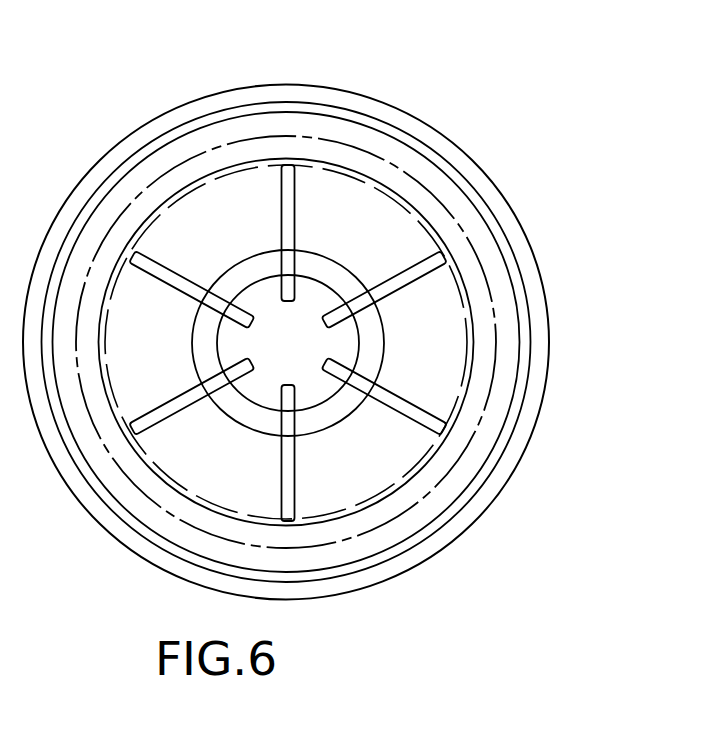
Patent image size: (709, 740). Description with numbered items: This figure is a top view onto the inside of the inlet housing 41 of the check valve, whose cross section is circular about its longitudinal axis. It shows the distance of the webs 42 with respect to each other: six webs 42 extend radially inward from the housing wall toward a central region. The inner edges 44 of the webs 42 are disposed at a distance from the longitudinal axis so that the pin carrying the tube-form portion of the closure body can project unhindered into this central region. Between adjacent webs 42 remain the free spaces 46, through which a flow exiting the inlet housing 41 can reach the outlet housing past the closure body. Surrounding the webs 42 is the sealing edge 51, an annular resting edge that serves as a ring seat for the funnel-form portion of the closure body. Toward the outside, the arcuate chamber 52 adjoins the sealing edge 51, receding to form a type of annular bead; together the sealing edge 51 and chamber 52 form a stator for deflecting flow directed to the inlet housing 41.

The inlet housing 41 is at (412, 101).
The webs 42 is at (289, 219).
The inner edges 44 is at (288, 343).
The spaces 46 is at (375, 248).
The sealing edge 51 is at (202, 178).
The chamber 52 is at (255, 137).